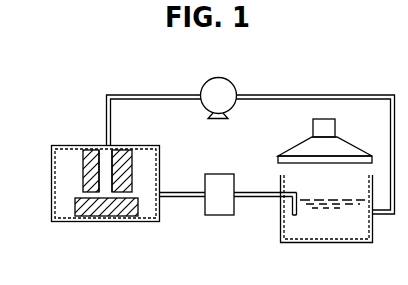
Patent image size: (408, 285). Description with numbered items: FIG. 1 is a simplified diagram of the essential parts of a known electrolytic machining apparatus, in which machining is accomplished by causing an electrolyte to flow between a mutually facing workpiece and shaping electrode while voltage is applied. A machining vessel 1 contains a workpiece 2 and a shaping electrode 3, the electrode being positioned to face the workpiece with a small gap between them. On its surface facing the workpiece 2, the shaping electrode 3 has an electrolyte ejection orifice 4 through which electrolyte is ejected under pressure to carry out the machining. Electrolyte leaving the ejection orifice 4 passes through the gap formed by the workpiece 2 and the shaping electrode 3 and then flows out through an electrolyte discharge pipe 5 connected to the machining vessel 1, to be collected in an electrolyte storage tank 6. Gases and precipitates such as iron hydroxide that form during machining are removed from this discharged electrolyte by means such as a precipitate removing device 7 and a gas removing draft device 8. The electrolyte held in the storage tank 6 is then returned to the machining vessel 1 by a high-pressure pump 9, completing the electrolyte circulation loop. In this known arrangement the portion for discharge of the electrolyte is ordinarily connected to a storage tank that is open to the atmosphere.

The machining vessel 1 is at (67, 147).
The workpiece 2 is at (102, 214).
The shaping electrode 3 is at (90, 148).
The electrolyte ejection orifice 4 is at (100, 178).
The electrolyte discharge pipe 5 is at (182, 198).
The electrolyte storage tank 6 is at (322, 232).
The precipitate removing device 7 is at (217, 207).
The gas removing draft device 8 is at (303, 148).
The high-pressure pump 9 is at (227, 83).